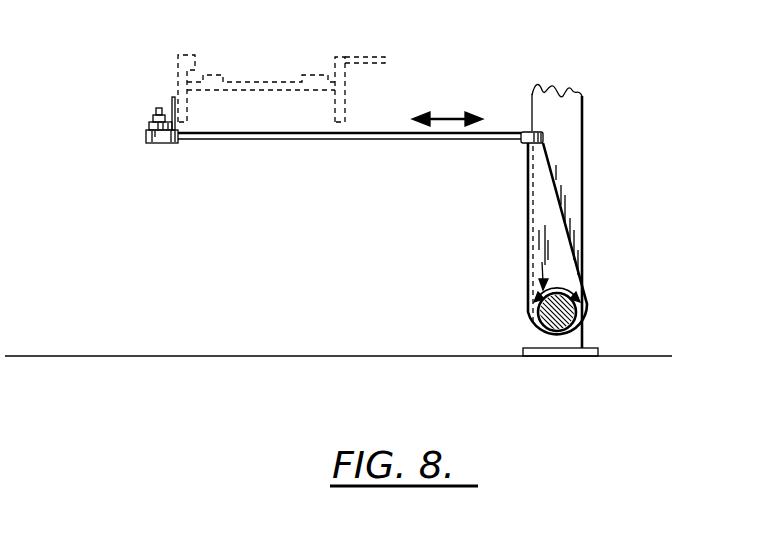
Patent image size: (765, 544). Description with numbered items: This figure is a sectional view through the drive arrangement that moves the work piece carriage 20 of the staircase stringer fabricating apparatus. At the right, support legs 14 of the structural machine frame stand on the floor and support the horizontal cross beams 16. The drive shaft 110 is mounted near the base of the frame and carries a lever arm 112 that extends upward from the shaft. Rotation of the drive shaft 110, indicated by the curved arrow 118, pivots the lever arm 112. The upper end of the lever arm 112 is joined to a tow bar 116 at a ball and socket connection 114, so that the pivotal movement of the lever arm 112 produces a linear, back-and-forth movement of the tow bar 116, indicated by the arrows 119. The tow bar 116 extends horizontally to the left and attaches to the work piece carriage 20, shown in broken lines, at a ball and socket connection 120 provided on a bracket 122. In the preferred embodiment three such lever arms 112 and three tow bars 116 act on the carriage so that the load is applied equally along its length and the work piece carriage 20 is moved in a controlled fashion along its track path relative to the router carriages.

The support legs 14 is at (563, 133).
The cross beams 16 is at (393, 355).
The work piece carriage 20 is at (268, 68).
The drive shaft 110 is at (557, 314).
The lever arm 112 is at (547, 231).
The ball and socket connection 114 is at (523, 144).
The tow bar 116 is at (313, 142).
The curved arrow 118 is at (568, 289).
The arrows 119 is at (448, 117).
The ball and socket connection 120 is at (160, 144).
The bracket 122 is at (172, 100).